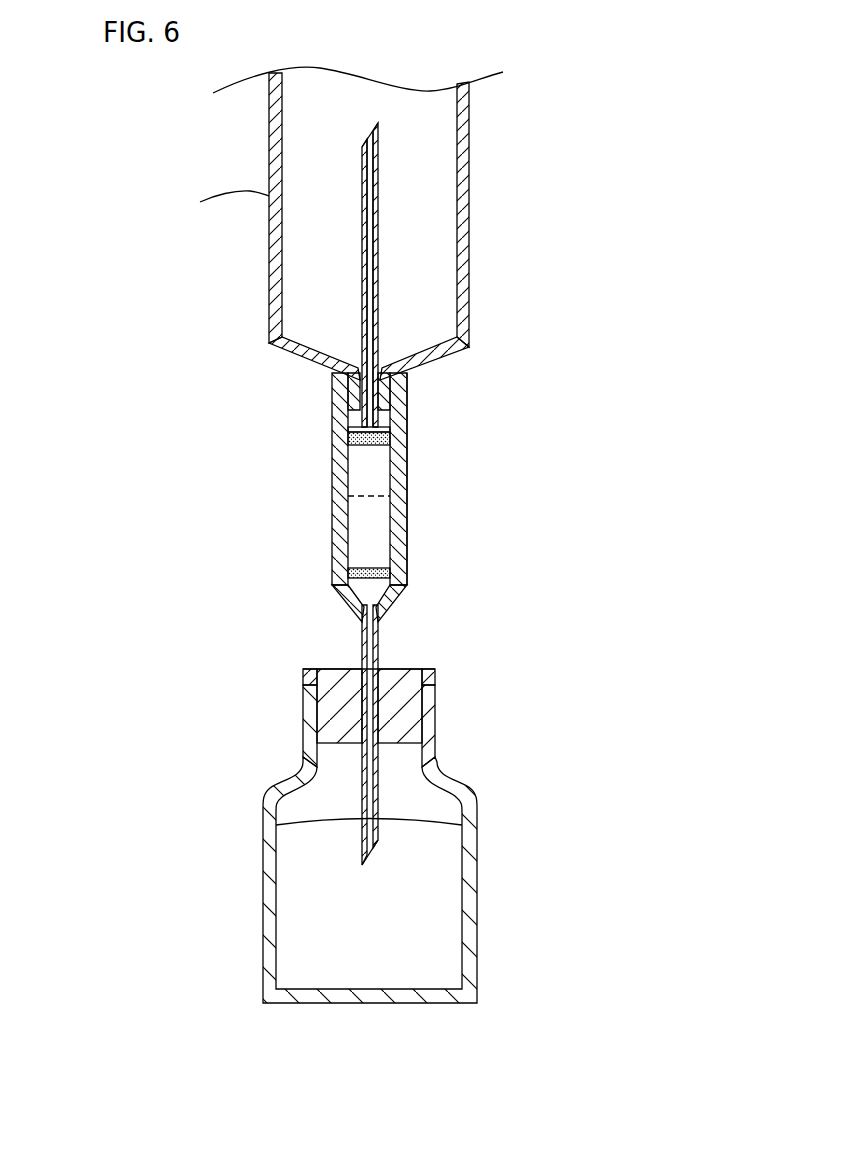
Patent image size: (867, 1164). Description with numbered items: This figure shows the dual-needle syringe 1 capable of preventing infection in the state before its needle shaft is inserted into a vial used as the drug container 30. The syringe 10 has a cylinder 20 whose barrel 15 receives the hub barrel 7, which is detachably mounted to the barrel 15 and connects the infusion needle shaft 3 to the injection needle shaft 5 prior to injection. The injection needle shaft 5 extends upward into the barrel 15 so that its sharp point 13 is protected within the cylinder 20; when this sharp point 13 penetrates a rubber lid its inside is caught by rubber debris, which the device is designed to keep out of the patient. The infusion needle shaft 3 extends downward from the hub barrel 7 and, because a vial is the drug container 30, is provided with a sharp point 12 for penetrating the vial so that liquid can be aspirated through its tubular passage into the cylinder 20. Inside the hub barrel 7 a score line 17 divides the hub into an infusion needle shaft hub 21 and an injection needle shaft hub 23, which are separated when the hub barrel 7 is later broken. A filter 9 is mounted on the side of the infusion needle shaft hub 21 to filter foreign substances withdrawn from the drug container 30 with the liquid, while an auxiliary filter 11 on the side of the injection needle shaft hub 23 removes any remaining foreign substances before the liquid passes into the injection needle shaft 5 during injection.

The dual-needle syringe 1 is at (345, 612).
The infusion needle shaft 3 is at (380, 717).
The injection needle shaft 5 is at (378, 253).
The hub barrel 7 is at (365, 479).
The filter 9 is at (357, 568).
The syringe 10 is at (416, 247).
The auxiliary filter 11 is at (363, 450).
The sharp point 12 is at (362, 866).
The sharp point 13 is at (469, 262).
The barrel 15 is at (407, 388).
The score line 17 is at (362, 505).
The cylinder 20 is at (269, 195).
The infusion needle shaft hub 21 is at (407, 530).
The injection needle shaft hub 23 is at (407, 445).
The drug container 30 is at (425, 836).